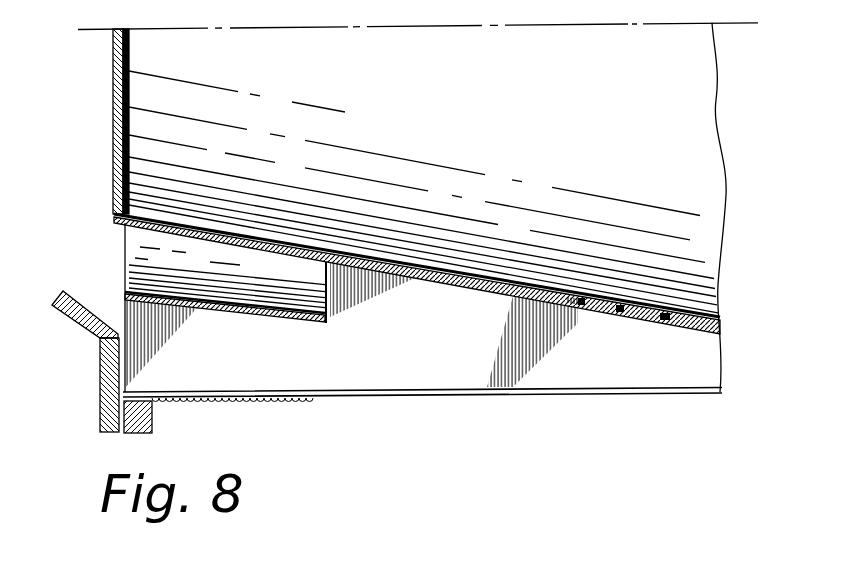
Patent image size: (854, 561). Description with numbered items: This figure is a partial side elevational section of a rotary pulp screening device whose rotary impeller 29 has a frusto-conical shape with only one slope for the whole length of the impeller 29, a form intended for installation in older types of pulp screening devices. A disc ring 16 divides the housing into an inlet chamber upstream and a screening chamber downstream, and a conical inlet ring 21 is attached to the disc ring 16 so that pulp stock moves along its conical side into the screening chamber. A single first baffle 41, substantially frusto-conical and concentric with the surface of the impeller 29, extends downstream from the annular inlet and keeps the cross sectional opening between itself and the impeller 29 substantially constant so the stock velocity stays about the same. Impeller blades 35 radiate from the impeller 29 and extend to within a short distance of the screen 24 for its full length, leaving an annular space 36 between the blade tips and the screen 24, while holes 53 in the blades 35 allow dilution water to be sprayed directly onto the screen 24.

The disc ring 16 is at (108, 407).
The conical inlet ring 21 is at (87, 314).
The rotary impeller 29 is at (294, 250).
The first baffle 41 is at (275, 318).
The annular space 36 is at (450, 391).
The impeller blades 35 is at (465, 352).
The screen 24 is at (282, 403).
The holes 53 is at (660, 320).